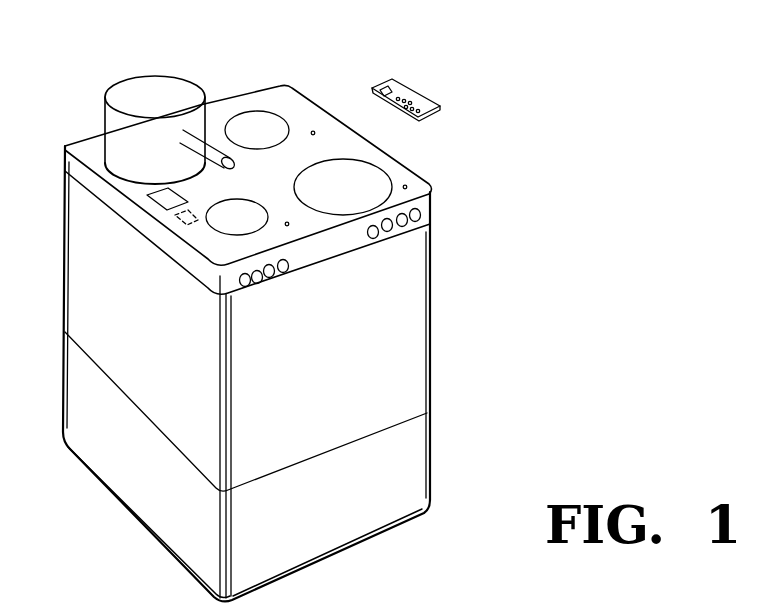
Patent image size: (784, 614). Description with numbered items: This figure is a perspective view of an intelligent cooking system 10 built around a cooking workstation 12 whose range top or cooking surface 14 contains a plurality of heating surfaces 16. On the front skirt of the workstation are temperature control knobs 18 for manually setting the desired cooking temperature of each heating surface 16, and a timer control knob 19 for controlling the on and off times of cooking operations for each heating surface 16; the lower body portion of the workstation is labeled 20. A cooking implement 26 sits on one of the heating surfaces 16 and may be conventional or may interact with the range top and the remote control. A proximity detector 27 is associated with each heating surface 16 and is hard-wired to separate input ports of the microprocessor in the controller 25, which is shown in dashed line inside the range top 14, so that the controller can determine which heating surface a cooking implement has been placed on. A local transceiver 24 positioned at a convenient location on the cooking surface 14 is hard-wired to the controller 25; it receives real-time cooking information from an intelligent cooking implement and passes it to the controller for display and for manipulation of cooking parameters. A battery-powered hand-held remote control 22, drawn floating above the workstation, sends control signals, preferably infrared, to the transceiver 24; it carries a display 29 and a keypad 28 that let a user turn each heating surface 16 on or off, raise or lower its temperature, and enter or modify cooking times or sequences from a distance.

The intelligent cooking system 10 is at (510, 90).
The cooking workstation 12 is at (143, 395).
The range top or cooking surface 14 is at (82, 139).
The heating surface 16 is at (258, 115).
The temperature control knob 18 is at (262, 276).
The timer control knob 19 is at (262, 262).
The lower housing section 20 is at (407, 395).
The hand-held remote control 22 is at (412, 95).
The local transceiver 24 is at (150, 205).
The controller 25 is at (183, 225).
The cooking implement 26 is at (165, 87).
The proximity detector 27 is at (314, 131).
The keypad 28 is at (431, 112).
The remote display 29 is at (386, 87).